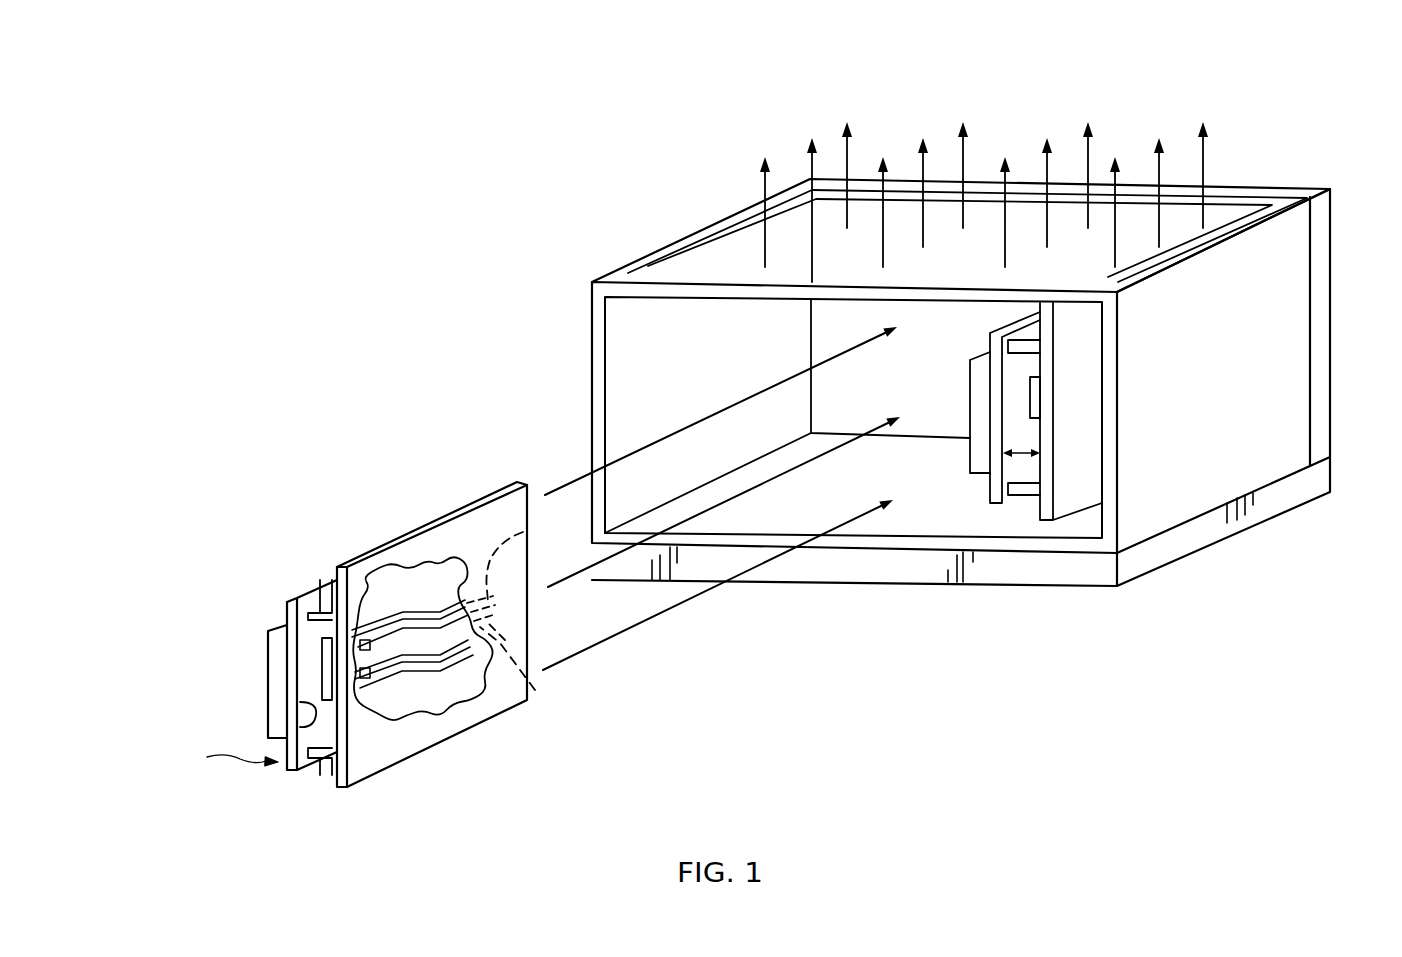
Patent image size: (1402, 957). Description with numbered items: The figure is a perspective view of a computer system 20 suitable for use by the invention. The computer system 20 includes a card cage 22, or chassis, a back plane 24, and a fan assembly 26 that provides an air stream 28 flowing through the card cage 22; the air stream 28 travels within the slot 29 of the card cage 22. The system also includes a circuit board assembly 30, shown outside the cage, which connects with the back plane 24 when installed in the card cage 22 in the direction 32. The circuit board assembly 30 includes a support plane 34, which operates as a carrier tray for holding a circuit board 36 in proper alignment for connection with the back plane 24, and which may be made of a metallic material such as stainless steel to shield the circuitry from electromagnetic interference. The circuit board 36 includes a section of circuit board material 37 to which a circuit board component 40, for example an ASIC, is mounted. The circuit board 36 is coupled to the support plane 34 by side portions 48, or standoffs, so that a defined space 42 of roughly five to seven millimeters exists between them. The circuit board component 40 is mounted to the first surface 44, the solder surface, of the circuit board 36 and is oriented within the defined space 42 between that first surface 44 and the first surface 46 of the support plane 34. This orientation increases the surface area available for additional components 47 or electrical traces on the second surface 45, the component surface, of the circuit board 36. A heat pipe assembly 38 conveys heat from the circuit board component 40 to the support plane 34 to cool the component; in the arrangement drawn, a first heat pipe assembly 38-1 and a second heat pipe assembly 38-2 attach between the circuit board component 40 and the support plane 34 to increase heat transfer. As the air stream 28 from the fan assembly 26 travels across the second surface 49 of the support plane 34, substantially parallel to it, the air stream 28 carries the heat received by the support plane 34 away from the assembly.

The computer system 20 is at (576, 102).
The card cage 22 is at (590, 337).
The back plane 24 is at (1310, 195).
The fan assembly 26 is at (1230, 530).
The air stream 28 is at (763, 184).
The slot 29 is at (1227, 208).
The circuit board assembly 30 is at (314, 465).
The direction 32 is at (647, 623).
The support plane 34 is at (475, 727).
The circuit board 36 is at (290, 772).
The section of circuit board material 37 is at (305, 685).
The heat pipe assembly 38 is at (390, 680).
The first heat pipe assembly 38-1 is at (525, 531).
The second heat pipe assembly 38-2 is at (537, 693).
The circuit board component 40 is at (380, 607).
The defined space 42 is at (1020, 460).
The first surface of the circuit board 44 is at (310, 717).
The second surface of the circuit board 45 is at (225, 758).
The first surface of the support plane 46 is at (440, 513).
The additional components 47 is at (273, 642).
The side portions 48 is at (323, 585).
The second surface of the support plane 49 is at (513, 635).